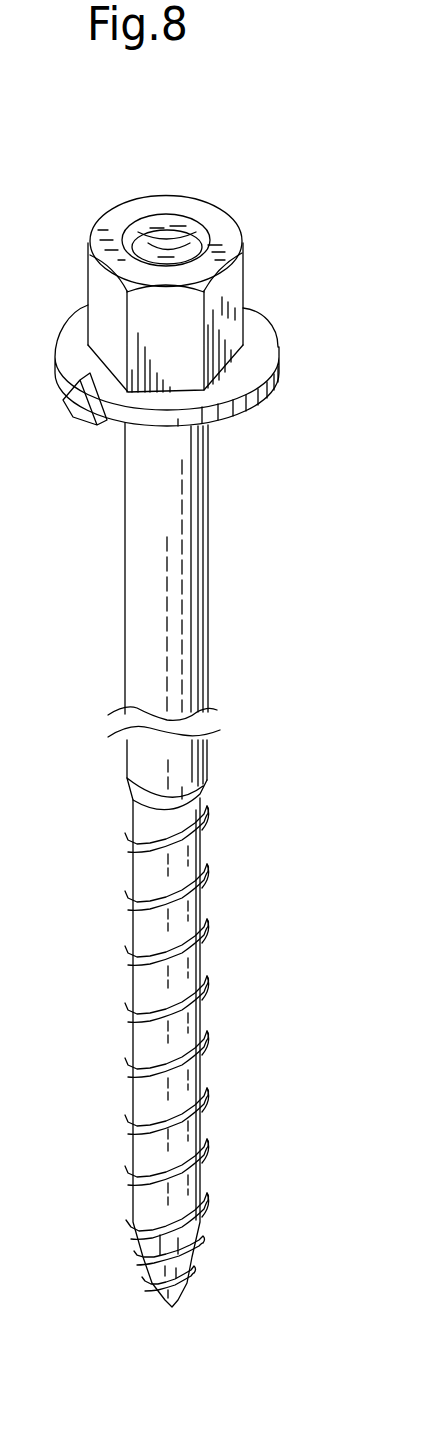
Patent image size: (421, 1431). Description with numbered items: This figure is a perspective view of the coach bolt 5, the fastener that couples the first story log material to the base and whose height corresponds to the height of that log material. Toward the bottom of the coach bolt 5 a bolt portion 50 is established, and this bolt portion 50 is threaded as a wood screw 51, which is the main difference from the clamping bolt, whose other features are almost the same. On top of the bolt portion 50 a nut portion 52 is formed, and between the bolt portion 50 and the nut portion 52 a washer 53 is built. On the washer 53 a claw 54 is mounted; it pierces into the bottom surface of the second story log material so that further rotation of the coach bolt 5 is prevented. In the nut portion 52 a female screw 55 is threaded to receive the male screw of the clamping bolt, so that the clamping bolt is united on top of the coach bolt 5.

The coach bolt 5 is at (181, 734).
The bolt portion 50 is at (137, 555).
The wood screw 51 is at (203, 884).
The nut portion 52 is at (233, 278).
The washer 53 is at (257, 347).
The claw 54 is at (75, 408).
The female screw 55 is at (175, 230).